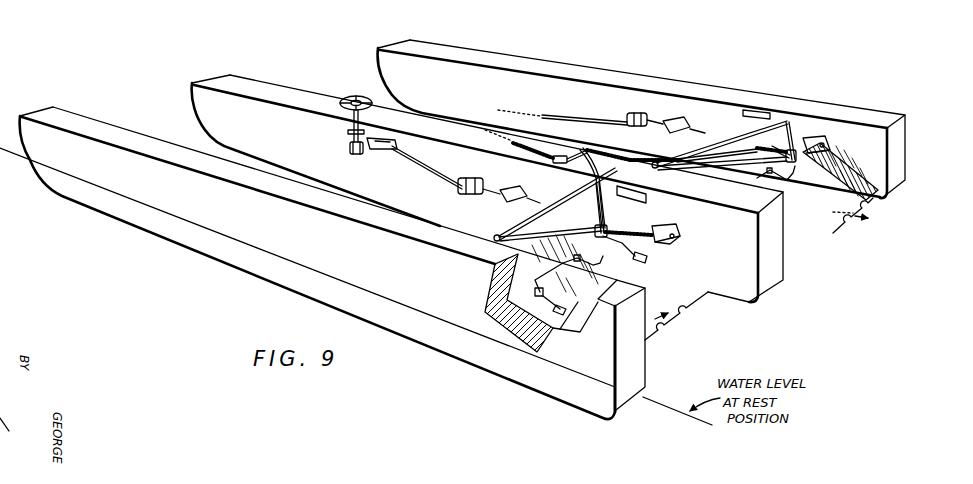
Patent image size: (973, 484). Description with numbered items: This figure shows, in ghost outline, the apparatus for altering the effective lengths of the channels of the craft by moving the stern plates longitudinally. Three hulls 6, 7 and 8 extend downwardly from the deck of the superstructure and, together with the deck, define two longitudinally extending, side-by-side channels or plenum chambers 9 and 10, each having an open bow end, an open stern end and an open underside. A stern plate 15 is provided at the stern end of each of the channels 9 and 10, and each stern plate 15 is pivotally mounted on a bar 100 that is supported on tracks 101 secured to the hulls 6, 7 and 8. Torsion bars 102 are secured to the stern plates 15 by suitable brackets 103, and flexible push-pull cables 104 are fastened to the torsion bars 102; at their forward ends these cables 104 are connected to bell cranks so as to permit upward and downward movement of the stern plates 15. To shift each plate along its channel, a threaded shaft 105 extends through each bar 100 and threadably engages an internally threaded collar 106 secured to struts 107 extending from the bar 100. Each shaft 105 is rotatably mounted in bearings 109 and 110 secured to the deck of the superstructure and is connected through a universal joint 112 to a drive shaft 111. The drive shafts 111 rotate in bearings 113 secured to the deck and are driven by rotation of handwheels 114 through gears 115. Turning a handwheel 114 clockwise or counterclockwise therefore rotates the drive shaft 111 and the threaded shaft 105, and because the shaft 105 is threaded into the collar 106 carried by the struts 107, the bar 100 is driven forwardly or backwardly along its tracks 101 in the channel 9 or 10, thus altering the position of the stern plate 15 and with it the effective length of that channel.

The hull 6 is at (434, 48).
The hull 7 is at (266, 92).
The hull 8 is at (117, 135).
The channel or plenum chamber 9 is at (589, 99).
The channel or plenum chamber 10 is at (438, 154).
The stern plate 15 is at (803, 238).
The bar 100 is at (558, 200).
The track 101 is at (620, 187).
The torsion bar 102 is at (534, 272).
The bracket 103 is at (533, 289).
The flexible push-pull cable 104 is at (610, 220).
The threaded shaft 105 is at (623, 241).
The internally threaded collar 106 is at (605, 223).
The strut 107 is at (513, 215).
The bearing 109 is at (503, 192).
The bearing 110 is at (680, 233).
The drive shaft 111 is at (412, 162).
The universal joint 112 is at (458, 187).
The bearing 113 is at (384, 139).
The handwheel 114 is at (350, 94).
The gears 115 is at (346, 139).